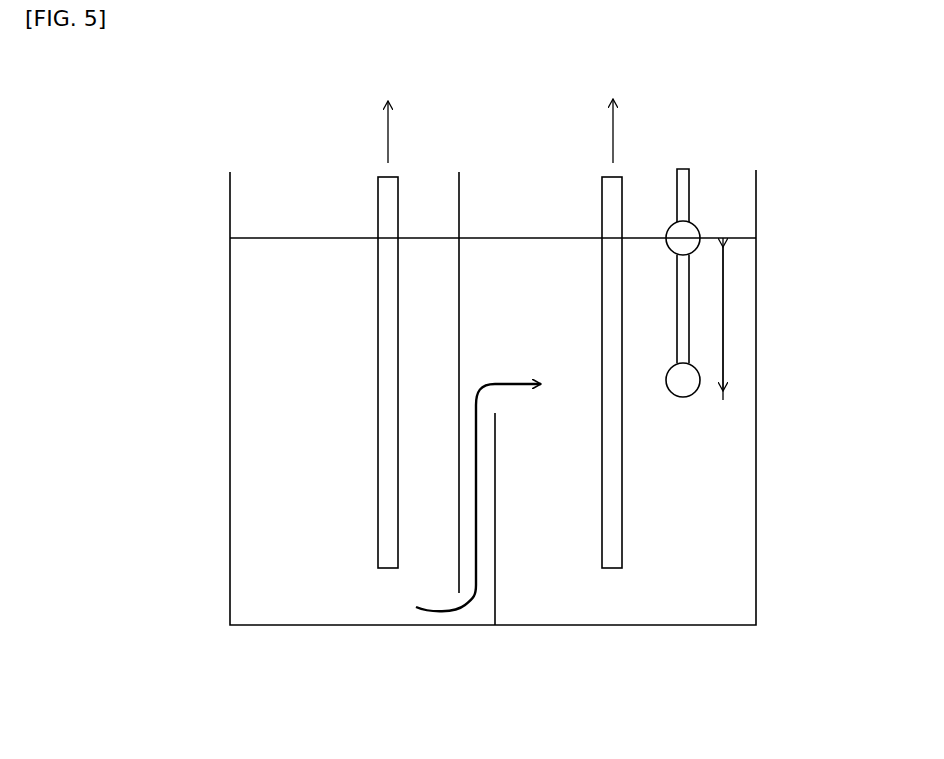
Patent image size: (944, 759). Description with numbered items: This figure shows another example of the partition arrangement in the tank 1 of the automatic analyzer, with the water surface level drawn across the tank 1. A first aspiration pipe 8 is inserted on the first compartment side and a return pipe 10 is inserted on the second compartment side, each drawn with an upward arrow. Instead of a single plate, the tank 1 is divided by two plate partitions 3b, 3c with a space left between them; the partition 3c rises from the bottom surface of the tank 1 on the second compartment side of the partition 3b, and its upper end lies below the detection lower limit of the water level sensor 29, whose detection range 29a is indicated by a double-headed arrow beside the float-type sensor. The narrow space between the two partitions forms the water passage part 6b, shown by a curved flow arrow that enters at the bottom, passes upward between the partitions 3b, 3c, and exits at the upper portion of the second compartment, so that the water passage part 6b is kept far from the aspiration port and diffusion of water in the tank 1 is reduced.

The tank 1 is at (230, 388).
The first aspiration pipe 8 is at (377, 323).
The return pipe 10 is at (622, 452).
The partition 3b is at (457, 205).
The partition 3c is at (497, 593).
The water passage part 6b is at (475, 495).
The water level sensor 29 is at (690, 193).
The detection range 29a is at (724, 327).